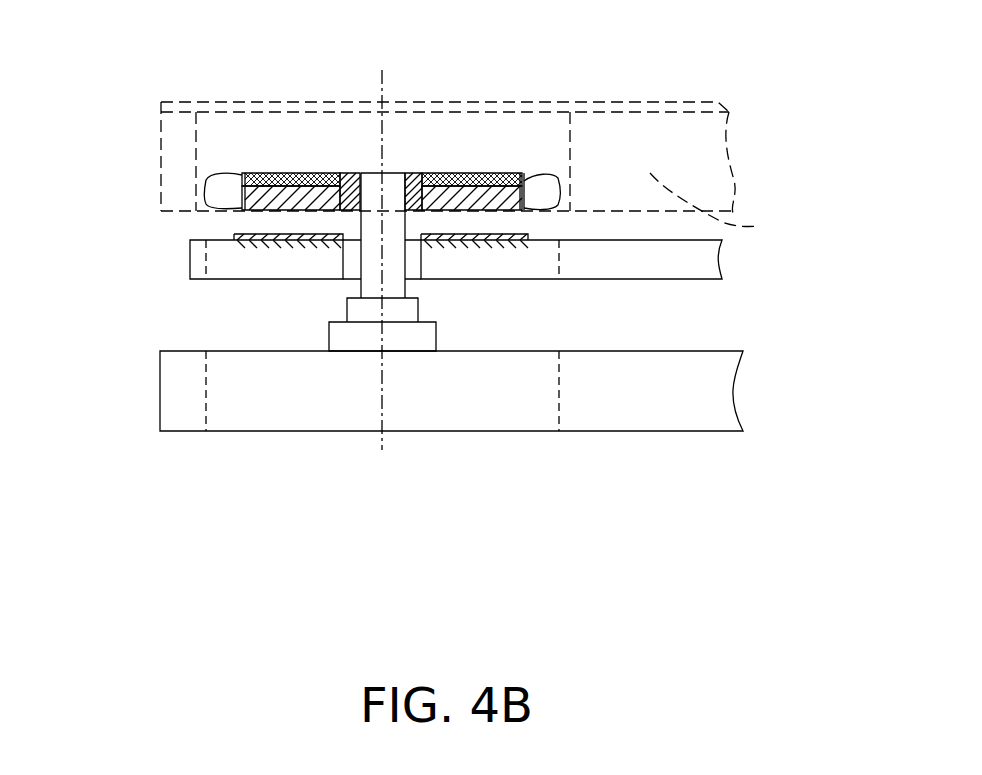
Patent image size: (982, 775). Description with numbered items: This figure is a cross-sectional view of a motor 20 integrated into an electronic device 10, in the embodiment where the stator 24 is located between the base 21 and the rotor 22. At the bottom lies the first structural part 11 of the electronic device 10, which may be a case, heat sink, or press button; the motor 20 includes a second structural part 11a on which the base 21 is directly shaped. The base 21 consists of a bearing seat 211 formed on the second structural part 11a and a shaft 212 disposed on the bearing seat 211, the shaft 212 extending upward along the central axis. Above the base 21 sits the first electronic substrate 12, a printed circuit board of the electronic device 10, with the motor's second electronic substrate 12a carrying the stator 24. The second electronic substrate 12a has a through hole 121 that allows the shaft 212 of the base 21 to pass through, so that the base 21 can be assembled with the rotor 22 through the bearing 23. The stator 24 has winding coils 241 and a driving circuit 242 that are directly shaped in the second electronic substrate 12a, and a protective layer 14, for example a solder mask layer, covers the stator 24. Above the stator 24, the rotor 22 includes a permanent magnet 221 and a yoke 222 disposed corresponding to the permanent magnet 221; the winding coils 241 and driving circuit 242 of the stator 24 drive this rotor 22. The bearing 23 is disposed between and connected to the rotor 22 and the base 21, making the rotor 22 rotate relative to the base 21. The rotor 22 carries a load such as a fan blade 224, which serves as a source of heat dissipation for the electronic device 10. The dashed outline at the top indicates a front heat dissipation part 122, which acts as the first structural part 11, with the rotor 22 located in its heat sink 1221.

The electronic device 10 is at (90, 162).
The first structural part 11 is at (176, 392).
The second structural part 11a is at (305, 410).
The first electronic substrate 12 is at (202, 262).
The second electronic substrate 12a is at (488, 268).
The through hole 121 is at (413, 270).
The front heat dissipation part 122 is at (626, 98).
The heat sink 1221 is at (740, 200).
The protective layer 14 is at (283, 238).
The motor 20 is at (575, 223).
The base 21 is at (303, 262).
The bearing seat 211 is at (357, 312).
The shaft 212 is at (373, 279).
The rotor 22 is at (373, 191).
The permanent magnet 221 is at (243, 175).
The yoke 222 is at (260, 208).
The fan blade 224 is at (212, 192).
The bearing 23 is at (412, 204).
The stator 24 is at (448, 289).
The winding coils 241 is at (500, 242).
The driving circuit 242 is at (480, 242).